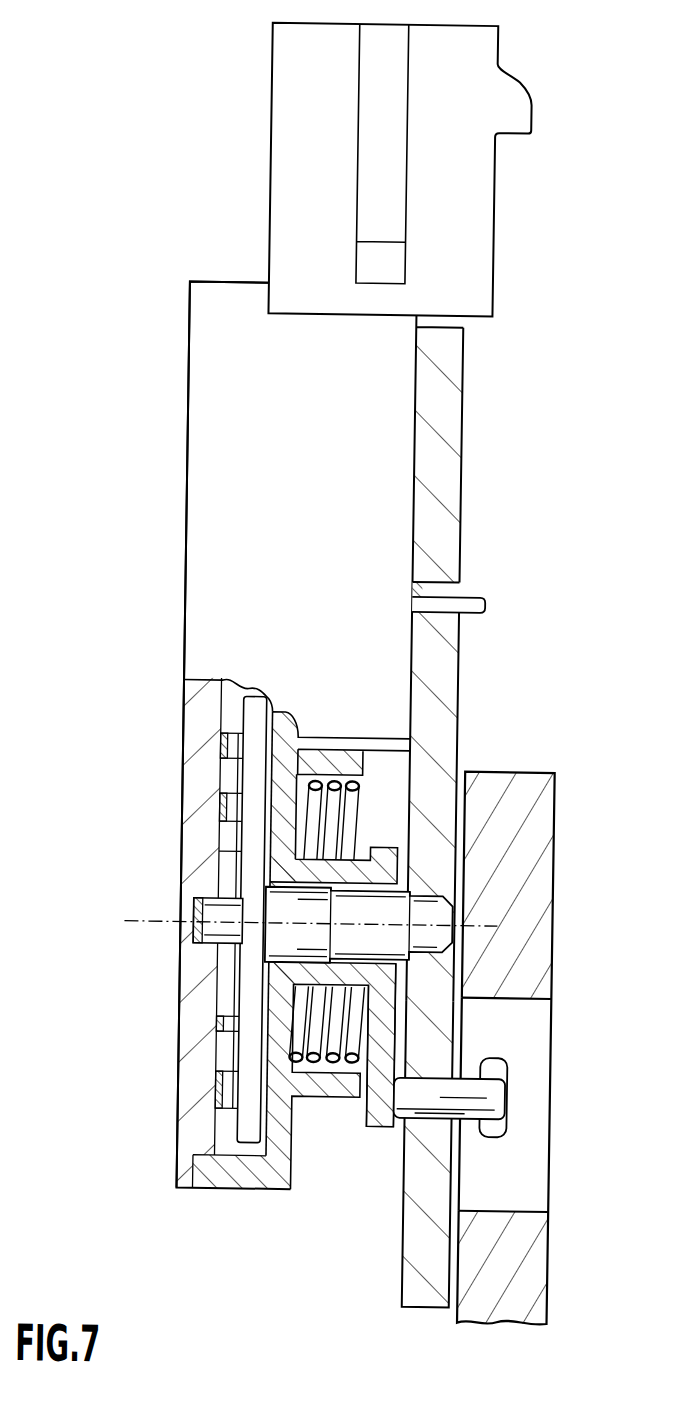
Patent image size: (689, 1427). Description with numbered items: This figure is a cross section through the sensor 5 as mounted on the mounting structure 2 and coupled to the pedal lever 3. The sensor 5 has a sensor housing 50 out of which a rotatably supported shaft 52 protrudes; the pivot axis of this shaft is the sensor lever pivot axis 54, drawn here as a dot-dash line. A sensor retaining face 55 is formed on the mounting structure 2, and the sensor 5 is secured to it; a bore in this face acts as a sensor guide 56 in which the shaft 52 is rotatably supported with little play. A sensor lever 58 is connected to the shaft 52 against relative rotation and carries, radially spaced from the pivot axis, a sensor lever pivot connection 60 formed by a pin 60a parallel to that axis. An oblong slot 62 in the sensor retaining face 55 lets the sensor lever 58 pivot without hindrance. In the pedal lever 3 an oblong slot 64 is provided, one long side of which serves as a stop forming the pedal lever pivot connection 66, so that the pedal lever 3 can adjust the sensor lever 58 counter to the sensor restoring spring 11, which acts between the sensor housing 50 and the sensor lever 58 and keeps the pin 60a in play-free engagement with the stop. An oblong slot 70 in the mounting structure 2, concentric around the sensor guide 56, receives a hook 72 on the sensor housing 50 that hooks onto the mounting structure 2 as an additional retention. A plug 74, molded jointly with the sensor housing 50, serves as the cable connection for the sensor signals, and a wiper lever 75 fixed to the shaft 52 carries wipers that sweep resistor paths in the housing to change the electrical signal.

The mounting structure 2 is at (446, 497).
The pedal lever 3 is at (540, 1283).
The sensor 5 is at (166, 624).
The sensor restoring spring 11 is at (327, 1068).
The sensor housing 50 is at (198, 1104).
The shaft 52 is at (285, 937).
The sensor lever pivot axis 54 is at (154, 920).
The sensor retaining face 55 is at (409, 1244).
The sensor guide 56 is at (456, 948).
The sensor lever 58 is at (473, 1018).
The sensor lever pivot connection 60 is at (525, 1126).
The pin 60a is at (551, 1066).
The oblong slot 62 is at (404, 1131).
The oblong slot 64 is at (528, 1196).
The pedal lever pivot connection 66 is at (525, 1173).
The oblong slot 70 is at (433, 579).
The hook 72 is at (460, 618).
The plug 74 is at (474, 218).
The wiper lever 75 is at (256, 1133).